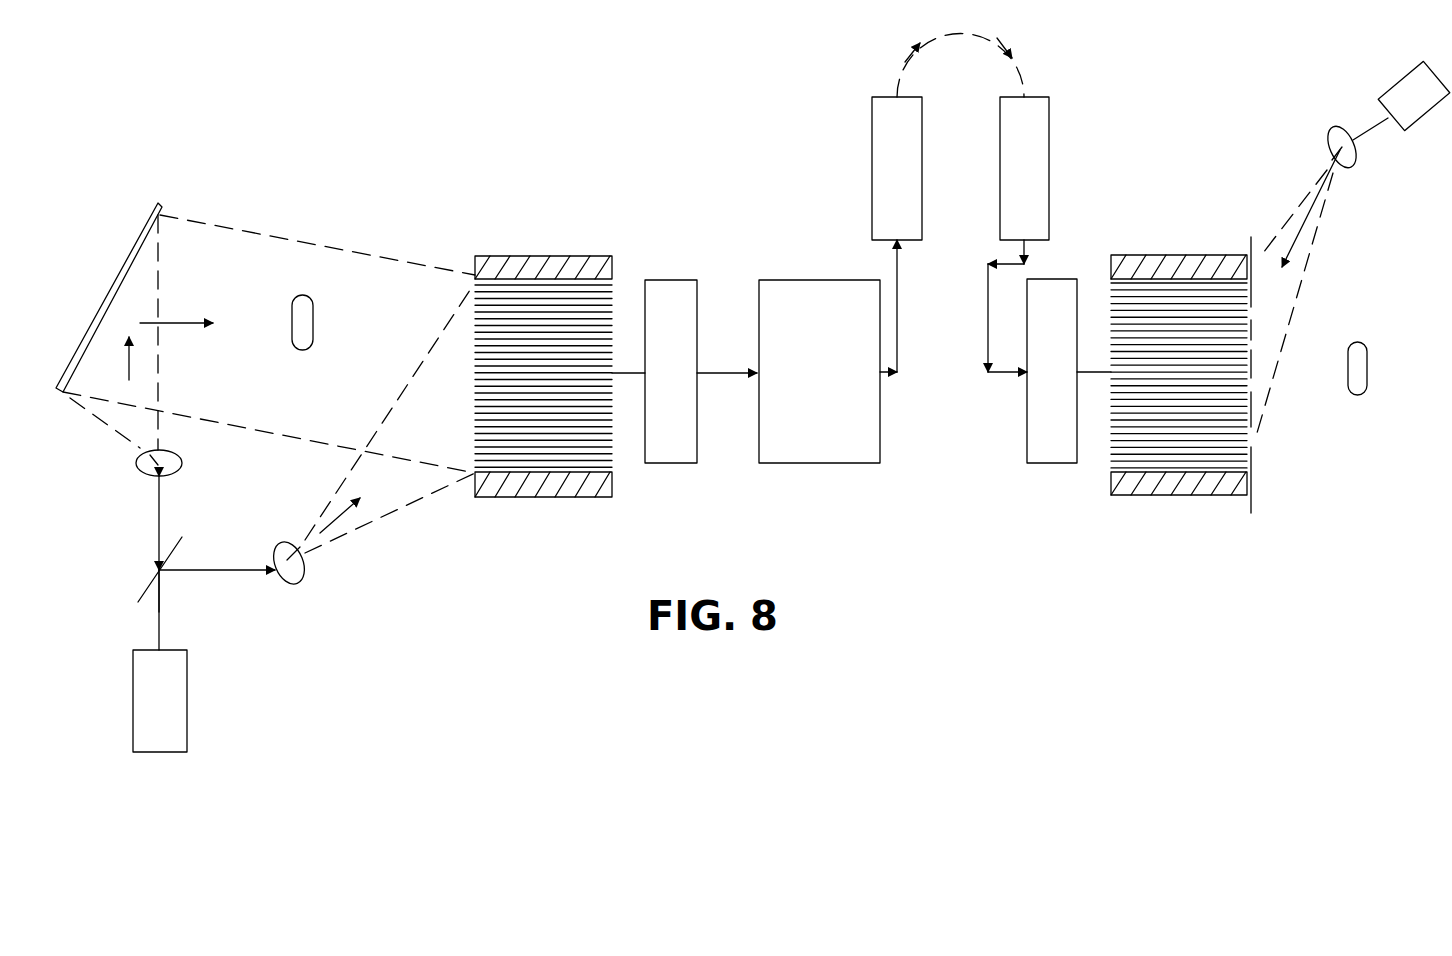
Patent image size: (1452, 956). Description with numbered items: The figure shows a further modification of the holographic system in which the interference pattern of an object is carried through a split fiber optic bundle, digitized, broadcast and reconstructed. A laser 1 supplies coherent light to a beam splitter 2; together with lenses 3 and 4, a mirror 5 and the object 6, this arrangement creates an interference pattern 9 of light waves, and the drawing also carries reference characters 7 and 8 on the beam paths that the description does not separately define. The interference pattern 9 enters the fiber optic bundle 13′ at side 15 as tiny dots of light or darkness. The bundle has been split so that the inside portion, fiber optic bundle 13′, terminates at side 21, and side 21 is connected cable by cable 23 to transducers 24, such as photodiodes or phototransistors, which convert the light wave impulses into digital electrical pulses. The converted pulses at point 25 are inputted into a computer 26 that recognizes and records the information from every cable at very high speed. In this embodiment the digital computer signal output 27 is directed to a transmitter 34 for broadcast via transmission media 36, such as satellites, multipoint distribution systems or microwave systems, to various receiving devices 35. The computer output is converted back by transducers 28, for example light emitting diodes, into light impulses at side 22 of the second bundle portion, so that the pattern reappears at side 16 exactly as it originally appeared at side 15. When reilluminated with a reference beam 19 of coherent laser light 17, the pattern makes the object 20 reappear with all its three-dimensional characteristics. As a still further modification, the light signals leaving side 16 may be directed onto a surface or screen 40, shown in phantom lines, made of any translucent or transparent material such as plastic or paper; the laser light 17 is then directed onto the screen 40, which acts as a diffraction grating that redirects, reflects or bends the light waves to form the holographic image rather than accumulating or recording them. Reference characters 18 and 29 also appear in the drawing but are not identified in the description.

The laser 1 is at (133, 668).
The beam splitter 2 is at (148, 584).
The lens 3 is at (150, 473).
The lens 4 is at (300, 582).
The mirror 5 is at (110, 287).
The object 6 is at (313, 315).
The reference beam 7 is at (222, 246).
The object beam direction 8 is at (365, 513).
The interference pattern 9 is at (413, 443).
The fiber optic bundle 13′ is at (483, 497).
The side 15 is at (470, 300).
The side 16 is at (1251, 375).
The coherent laser light 17 is at (1432, 108).
The lens 18 is at (1330, 148).
The reference beam 19 is at (1252, 242).
The object 20 is at (1367, 352).
The side 21 is at (610, 447).
The side 22 is at (1108, 440).
The cable 23 is at (622, 370).
The transducers 24 is at (652, 463).
The point 25 is at (710, 372).
The computer 26 is at (863, 464).
The output of the computer 27 is at (895, 277).
The transducers 28 is at (1047, 464).
The drive line 29 is at (1090, 367).
The transmitter 34 is at (872, 197).
The receiving devices 35 is at (1050, 207).
The transmission media 36 is at (968, 32).
The surface or screen 40 is at (1257, 473).